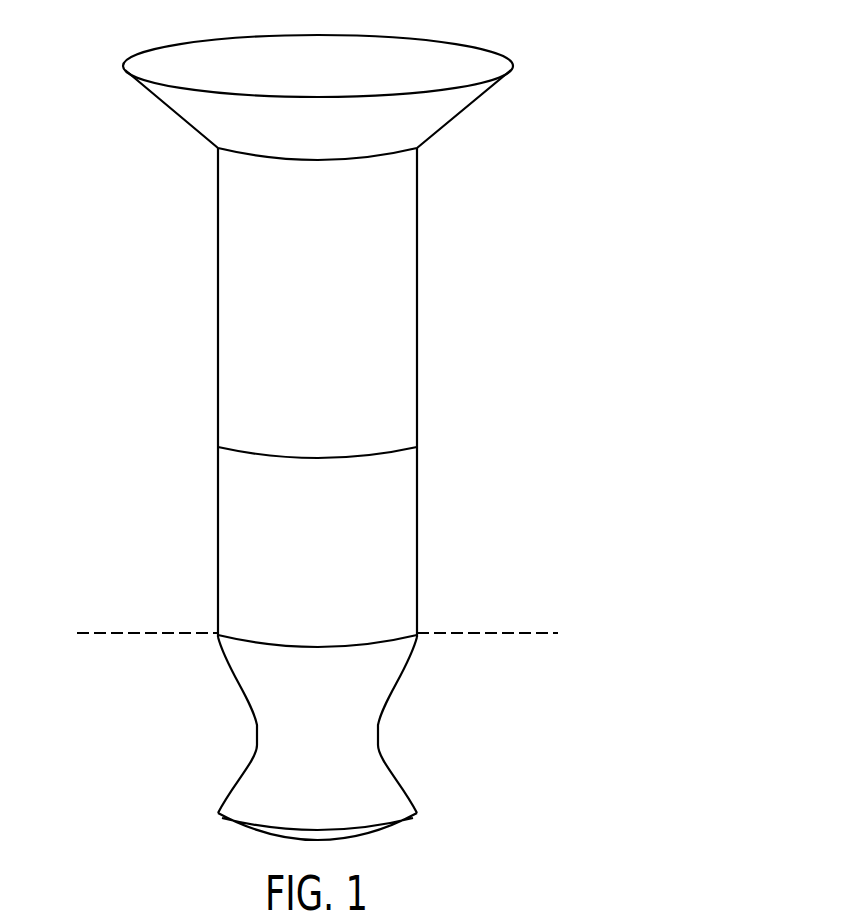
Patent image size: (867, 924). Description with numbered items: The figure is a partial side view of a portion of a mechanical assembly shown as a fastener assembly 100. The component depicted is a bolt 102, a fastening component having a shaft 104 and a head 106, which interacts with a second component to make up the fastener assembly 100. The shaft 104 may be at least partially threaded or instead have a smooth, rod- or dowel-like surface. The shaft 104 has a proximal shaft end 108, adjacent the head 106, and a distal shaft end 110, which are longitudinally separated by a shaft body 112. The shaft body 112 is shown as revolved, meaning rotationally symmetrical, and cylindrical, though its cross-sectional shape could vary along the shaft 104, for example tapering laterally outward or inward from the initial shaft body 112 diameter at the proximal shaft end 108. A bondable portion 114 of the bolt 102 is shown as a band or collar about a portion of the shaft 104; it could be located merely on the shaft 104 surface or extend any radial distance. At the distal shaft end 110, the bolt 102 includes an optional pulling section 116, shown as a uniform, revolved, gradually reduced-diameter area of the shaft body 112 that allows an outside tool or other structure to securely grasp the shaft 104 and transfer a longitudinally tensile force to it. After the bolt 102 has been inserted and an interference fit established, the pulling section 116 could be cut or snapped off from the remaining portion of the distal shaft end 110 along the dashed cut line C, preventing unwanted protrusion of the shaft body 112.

The fastener assembly 100 is at (650, 143).
The bolt 102 is at (118, 302).
The shaft 104 is at (419, 287).
The head 106 is at (492, 88).
The proximal shaft end 108 is at (455, 175).
The distal shaft end 110 is at (475, 698).
The shaft body 112 is at (370, 400).
The bondable portion 114 is at (420, 555).
The pulling section 116 is at (409, 783).
The cut line C is at (525, 633).